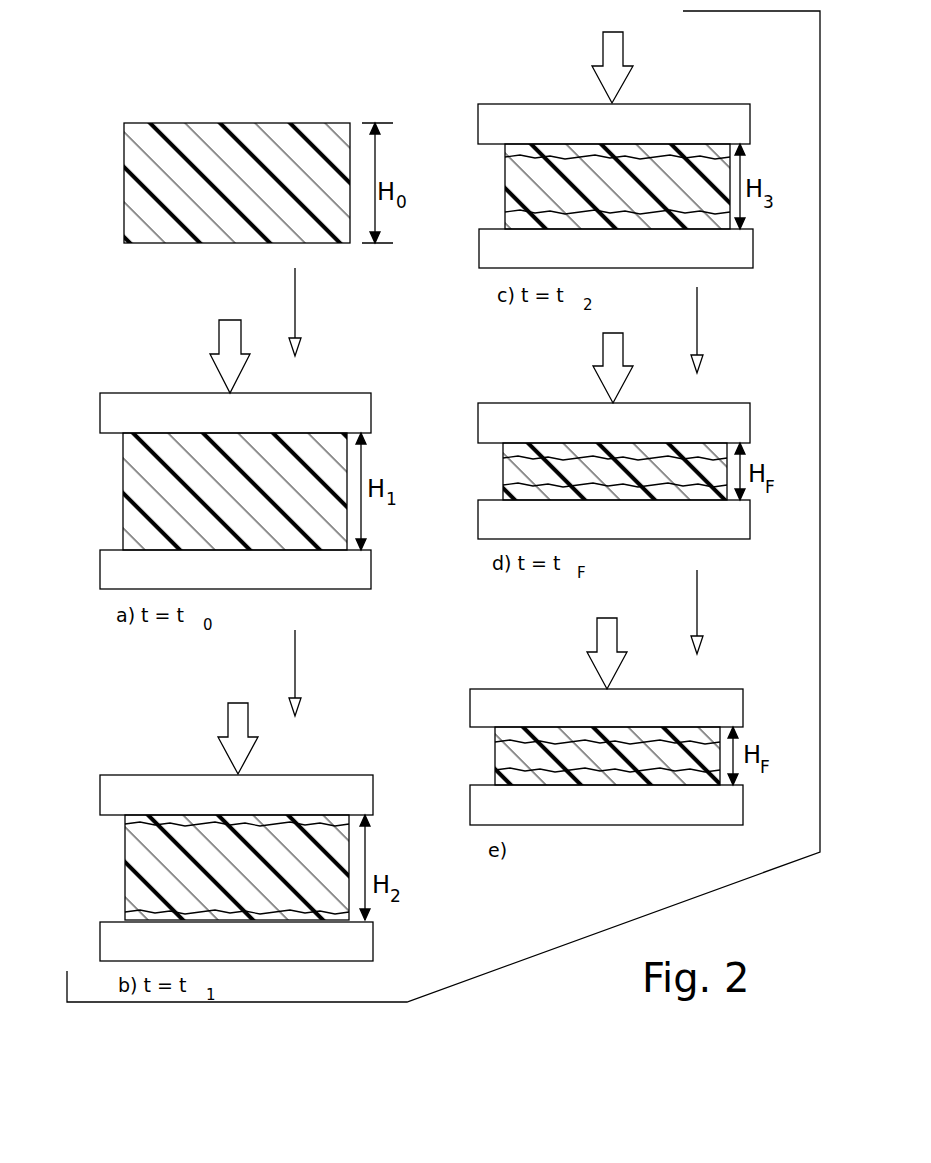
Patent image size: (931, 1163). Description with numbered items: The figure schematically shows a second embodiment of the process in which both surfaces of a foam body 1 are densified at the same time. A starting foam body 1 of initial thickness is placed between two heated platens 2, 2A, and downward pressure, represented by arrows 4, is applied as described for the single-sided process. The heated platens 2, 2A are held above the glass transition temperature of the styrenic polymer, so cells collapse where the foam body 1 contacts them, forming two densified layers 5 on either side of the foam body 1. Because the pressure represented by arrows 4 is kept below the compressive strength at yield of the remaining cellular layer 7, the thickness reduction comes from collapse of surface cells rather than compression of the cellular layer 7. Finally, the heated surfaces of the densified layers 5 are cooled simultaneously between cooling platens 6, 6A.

The foam body 1 is at (124, 188).
The heated platen 2A is at (100, 414).
The heated platen 2 is at (100, 573).
The arrows 4 is at (219, 332).
The densified layers 5 is at (125, 819).
The cellular layer 7 is at (125, 838).
The cooling platen 6A is at (470, 710).
The cooling platen 6 is at (470, 810).